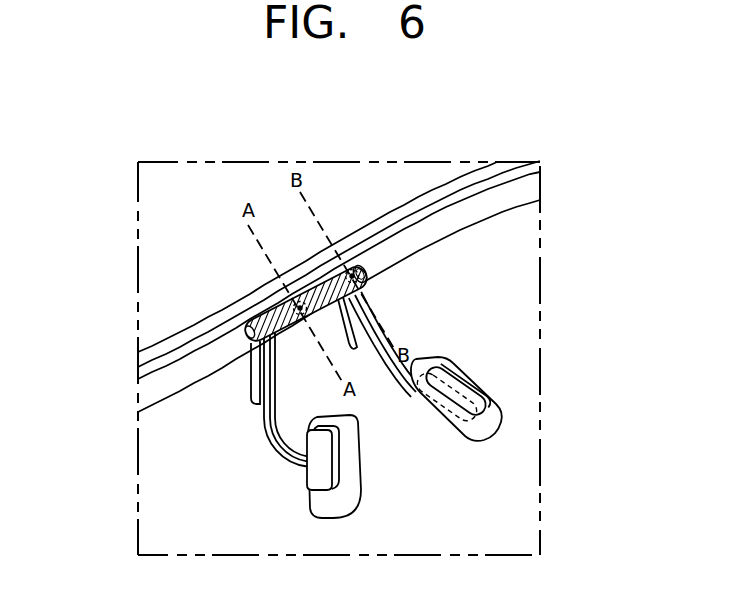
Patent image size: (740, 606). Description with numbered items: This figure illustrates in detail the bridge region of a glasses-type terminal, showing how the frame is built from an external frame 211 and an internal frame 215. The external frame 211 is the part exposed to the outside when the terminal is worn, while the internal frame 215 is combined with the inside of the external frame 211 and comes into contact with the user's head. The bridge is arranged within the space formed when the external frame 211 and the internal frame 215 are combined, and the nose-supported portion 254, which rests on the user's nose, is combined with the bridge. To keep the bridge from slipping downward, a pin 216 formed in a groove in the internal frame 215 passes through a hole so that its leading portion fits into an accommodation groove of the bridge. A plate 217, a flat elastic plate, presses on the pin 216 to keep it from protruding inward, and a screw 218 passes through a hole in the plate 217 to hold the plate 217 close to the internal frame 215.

The external frame 211 is at (211, 316).
The internal frame 215 is at (398, 228).
The pin 216 is at (248, 333).
The plate 217 is at (271, 314).
The screw 218 is at (299, 302).
The nose-supported portion 254 is at (490, 421).